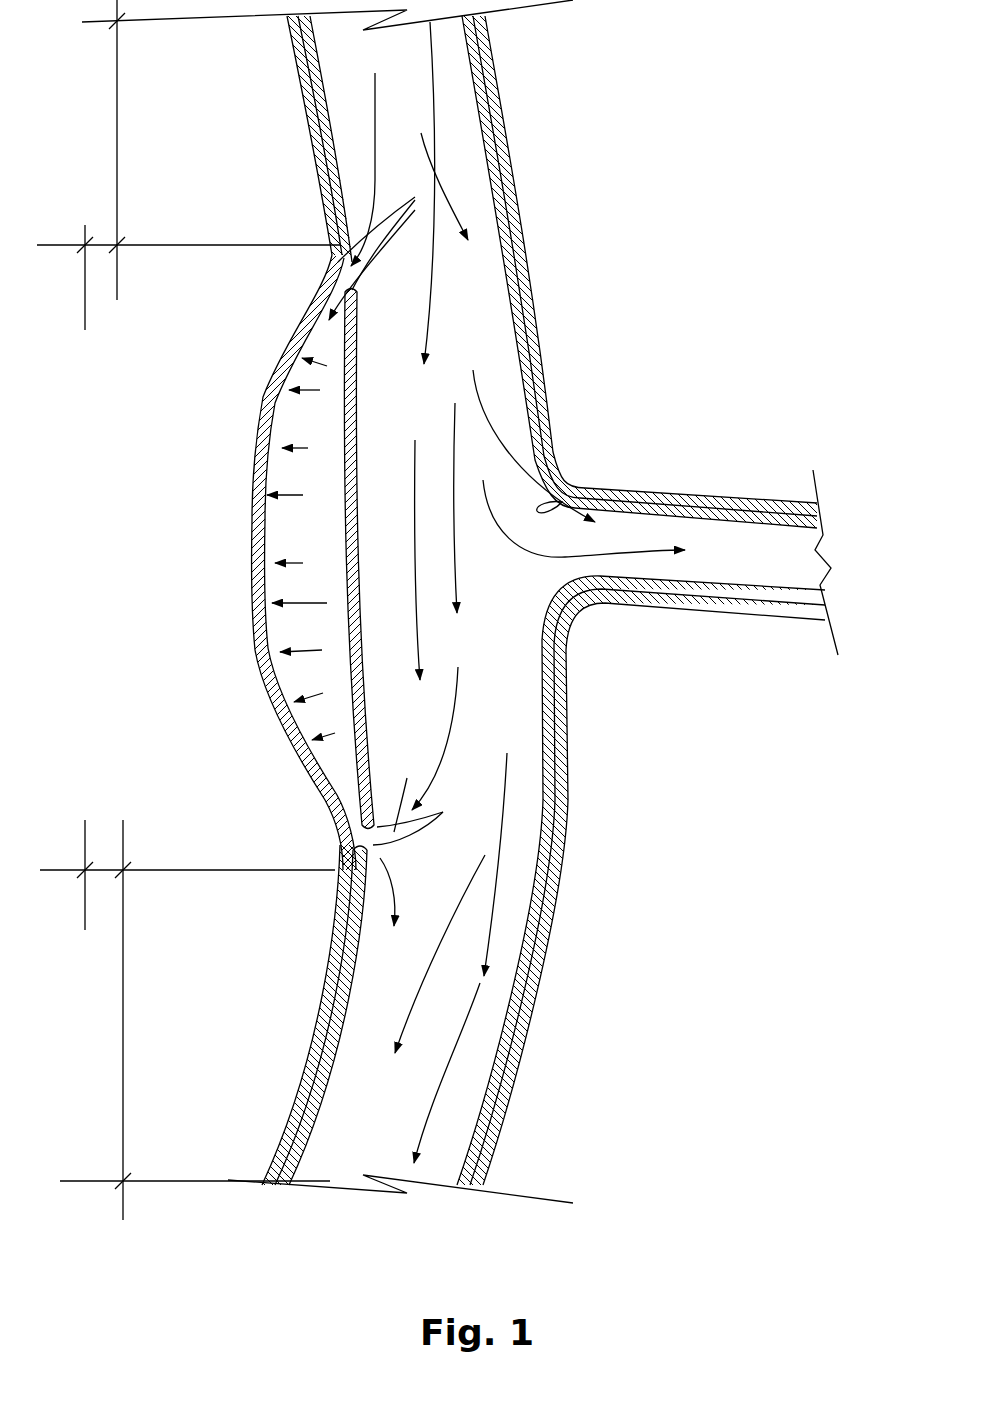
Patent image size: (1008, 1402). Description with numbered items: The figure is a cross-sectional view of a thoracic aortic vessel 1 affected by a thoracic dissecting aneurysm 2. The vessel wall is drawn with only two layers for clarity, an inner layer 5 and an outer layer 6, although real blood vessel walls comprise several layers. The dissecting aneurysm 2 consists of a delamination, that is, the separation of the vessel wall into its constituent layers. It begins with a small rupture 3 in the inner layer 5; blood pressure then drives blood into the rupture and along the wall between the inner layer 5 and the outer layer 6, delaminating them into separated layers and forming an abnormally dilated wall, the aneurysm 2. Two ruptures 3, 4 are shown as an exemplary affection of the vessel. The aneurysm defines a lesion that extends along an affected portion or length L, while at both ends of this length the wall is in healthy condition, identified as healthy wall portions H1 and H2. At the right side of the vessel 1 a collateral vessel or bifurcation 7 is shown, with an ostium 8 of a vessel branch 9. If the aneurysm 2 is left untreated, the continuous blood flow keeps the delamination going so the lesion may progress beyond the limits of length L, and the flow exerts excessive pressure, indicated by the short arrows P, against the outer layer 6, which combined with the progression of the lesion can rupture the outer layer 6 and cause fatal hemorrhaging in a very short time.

The thoracic aortic vessel 1 is at (555, 151).
The thoracic dissecting aneurysm 2 is at (254, 450).
The rupture 3 is at (360, 300).
The rupture 4 is at (336, 800).
The inner layer 5 is at (320, 64).
The outer layer 6 is at (312, 138).
The collateral vessel or bifurcation 7 is at (592, 644).
The ostium 8 is at (539, 507).
The vessel branch 9 is at (761, 500).
The pressure P is at (307, 650).
The healthy wall portion H1 is at (117, 21).
The healthy wall portion H2 is at (123, 870).
The affected portion or length L is at (85, 245).